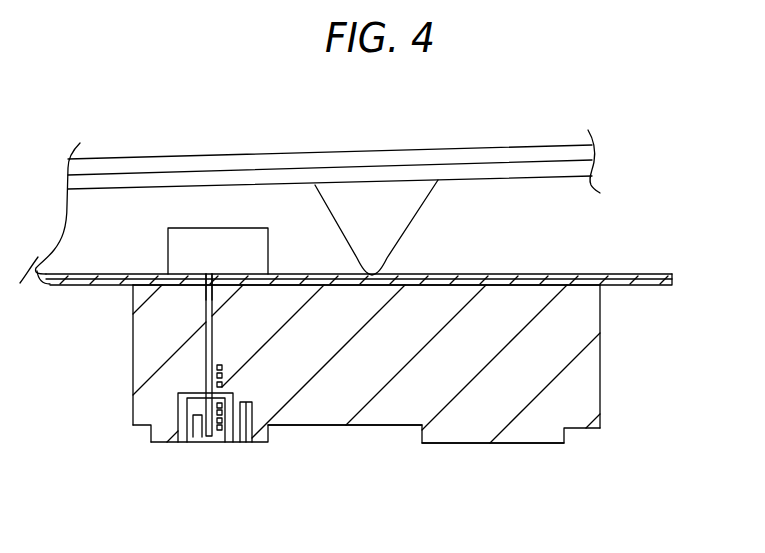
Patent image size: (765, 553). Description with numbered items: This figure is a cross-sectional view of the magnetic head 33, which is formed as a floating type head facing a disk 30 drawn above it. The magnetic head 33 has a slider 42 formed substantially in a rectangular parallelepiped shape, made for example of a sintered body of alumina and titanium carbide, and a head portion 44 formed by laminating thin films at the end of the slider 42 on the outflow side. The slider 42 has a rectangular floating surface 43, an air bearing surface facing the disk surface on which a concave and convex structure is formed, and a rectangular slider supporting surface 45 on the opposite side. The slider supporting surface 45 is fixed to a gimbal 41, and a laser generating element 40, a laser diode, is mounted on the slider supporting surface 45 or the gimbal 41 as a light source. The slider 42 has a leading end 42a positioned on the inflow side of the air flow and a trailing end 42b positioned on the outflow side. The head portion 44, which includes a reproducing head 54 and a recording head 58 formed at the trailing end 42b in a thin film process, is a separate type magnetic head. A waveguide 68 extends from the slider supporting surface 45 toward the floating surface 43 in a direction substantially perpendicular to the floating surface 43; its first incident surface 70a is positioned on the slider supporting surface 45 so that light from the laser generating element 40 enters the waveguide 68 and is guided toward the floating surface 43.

The display panel 30 is at (501, 158).
The magnetic head 33 is at (538, 455).
The laser generating element 40 is at (168, 249).
The gimbal 41 is at (622, 276).
The slider 42 is at (328, 402).
The leading end 42a is at (601, 364).
The trailing end 42b is at (133, 330).
The floating surface 43 is at (378, 428).
The head portion 44 is at (144, 436).
The slider supporting surface 45 is at (513, 276).
The reproducing head 54 is at (263, 445).
The recording head 58 is at (200, 445).
The waveguide 68 is at (205, 359).
The first incident surface 70a is at (213, 272).